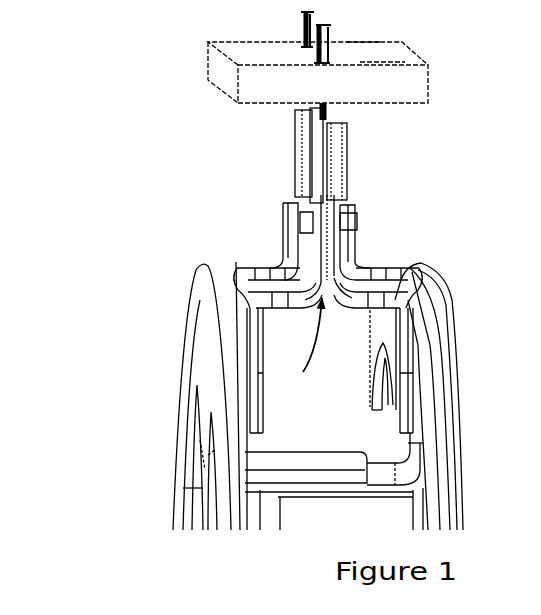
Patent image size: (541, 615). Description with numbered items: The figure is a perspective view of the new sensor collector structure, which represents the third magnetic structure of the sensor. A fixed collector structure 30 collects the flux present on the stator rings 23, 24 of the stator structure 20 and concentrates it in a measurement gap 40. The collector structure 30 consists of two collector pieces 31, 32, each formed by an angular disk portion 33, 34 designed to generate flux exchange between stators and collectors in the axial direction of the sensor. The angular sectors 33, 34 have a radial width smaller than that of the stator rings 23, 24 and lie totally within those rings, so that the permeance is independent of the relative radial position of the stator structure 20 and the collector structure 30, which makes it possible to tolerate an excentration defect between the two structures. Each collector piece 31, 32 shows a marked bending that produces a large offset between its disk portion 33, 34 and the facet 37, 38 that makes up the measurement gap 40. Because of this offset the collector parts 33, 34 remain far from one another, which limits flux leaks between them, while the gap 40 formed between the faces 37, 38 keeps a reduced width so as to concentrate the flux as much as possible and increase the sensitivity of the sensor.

The stator structure 20 is at (176, 408).
The stator ring 23 is at (195, 337).
The stator ring 24 is at (438, 323).
The fixed collector structure 30 is at (266, 246).
The collector piece 31 is at (260, 303).
The collector piece 32 is at (392, 300).
The angular disk portion 33 is at (240, 320).
The angular disk portion 34 is at (393, 330).
The facet 37 is at (315, 240).
The facet 38 is at (340, 250).
The measurement gap 40 is at (304, 351).